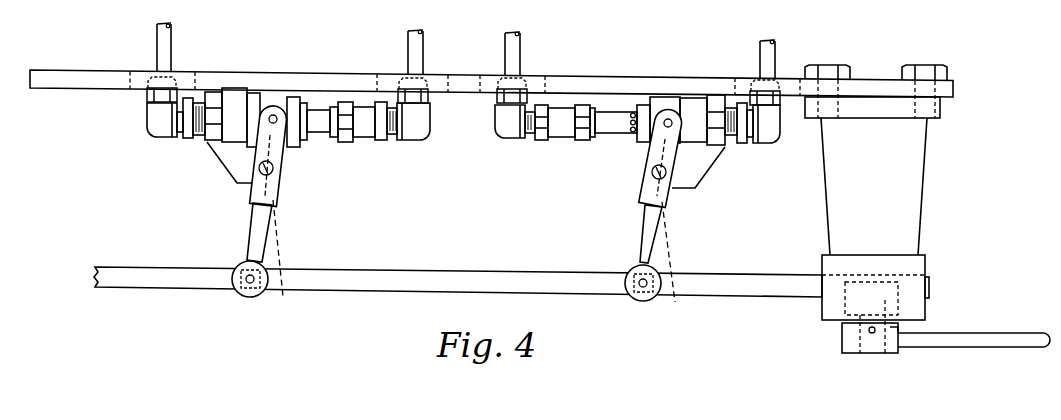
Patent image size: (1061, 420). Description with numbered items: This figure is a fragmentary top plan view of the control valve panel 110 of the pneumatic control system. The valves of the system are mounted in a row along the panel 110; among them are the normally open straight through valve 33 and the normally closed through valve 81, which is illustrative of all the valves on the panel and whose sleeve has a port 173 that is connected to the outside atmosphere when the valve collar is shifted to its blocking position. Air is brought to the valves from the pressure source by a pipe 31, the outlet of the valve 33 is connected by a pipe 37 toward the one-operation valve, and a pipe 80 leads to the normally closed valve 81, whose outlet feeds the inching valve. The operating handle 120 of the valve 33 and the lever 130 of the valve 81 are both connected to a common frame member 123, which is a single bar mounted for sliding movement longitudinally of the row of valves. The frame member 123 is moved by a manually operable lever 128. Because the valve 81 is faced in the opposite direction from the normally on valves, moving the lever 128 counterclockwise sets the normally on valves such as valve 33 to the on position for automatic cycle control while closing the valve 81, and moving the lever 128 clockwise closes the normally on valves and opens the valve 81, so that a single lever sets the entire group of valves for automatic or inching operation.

The pipe 31 is at (167, 47).
The pipe 37 is at (415, 57).
The pipe 80 is at (772, 53).
The panel 110 is at (62, 80).
The valve 33 is at (233, 128).
The through valve 81 is at (693, 137).
The port 173 is at (630, 128).
The operating handle 120 is at (255, 222).
The lever 130 is at (653, 228).
The frame member 123 is at (472, 275).
The manually operable lever 128 is at (973, 341).